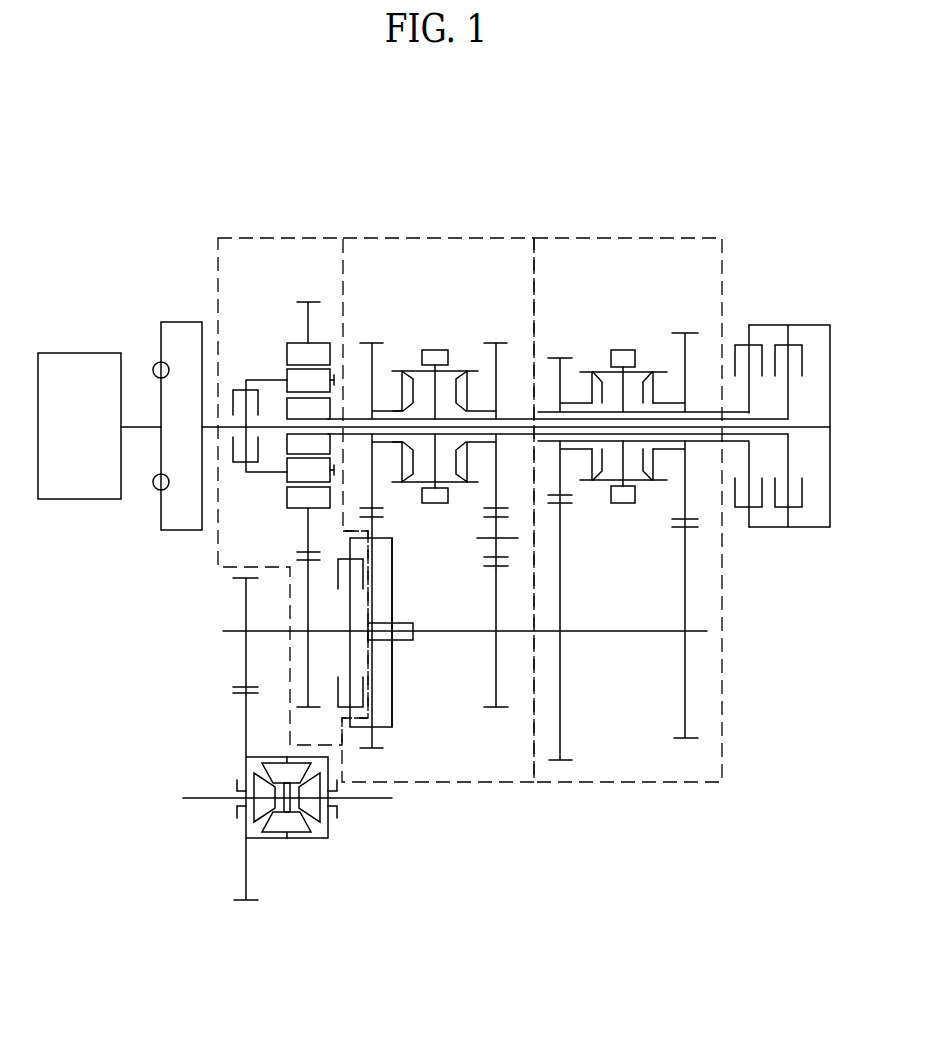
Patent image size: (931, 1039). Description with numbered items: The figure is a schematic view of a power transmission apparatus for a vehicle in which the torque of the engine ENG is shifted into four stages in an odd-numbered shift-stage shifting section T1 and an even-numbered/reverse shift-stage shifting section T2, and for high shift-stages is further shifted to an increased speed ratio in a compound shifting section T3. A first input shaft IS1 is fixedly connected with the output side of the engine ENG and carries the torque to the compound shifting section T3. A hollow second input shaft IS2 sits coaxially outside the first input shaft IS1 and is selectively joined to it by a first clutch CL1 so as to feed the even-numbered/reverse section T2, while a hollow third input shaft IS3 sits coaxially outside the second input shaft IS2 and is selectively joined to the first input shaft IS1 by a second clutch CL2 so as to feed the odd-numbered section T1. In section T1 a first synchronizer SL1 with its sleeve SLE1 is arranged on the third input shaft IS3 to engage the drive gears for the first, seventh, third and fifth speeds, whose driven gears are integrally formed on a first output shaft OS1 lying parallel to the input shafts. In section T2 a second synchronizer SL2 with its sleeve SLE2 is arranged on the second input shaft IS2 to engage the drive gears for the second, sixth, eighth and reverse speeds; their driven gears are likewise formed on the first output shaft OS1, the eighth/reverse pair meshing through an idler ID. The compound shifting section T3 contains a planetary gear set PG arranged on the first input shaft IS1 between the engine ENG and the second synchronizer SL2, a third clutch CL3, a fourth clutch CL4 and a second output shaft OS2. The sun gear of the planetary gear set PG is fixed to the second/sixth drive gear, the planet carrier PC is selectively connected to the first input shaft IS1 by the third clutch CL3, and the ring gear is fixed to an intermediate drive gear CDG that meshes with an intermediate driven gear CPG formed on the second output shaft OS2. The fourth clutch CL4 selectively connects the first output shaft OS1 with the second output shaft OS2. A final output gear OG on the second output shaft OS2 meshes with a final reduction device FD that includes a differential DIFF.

The engine ENG is at (79, 426).
The odd-numbered shift-stage shifting section T1 is at (637, 236).
The even-numbered/reverse shift-stage shifting section T2 is at (453, 236).
The compound shifting section T3 is at (302, 236).
The planetary gear set PG is at (288, 334).
The third clutch CL3 is at (238, 380).
The planet carrier PC is at (265, 380).
The intermediate drive gear CDG is at (308, 530).
The intermediate driven gear CPG is at (308, 660).
The first output shaft OS1 is at (600, 631).
The second output shaft OS2 is at (265, 631).
The final output gear OG is at (246, 657).
The final reduction device FD is at (236, 774).
The differential DIFF is at (297, 828).
The first input shaft IS1 is at (512, 439).
The second input shaft IS2 is at (512, 416).
The third input shaft IS3 is at (705, 444).
The sleeve of the second synchronizer SLE2 is at (437, 350).
The second synchronizer SL2 is at (448, 317).
The idler ID is at (483, 547).
The fourth clutch CL4 is at (373, 569).
The sleeve of the first synchronizer SLE1 is at (623, 350).
The first synchronizer SL1 is at (636, 317).
The first clutch CL1 is at (797, 336).
The second clutch CL2 is at (757, 336).